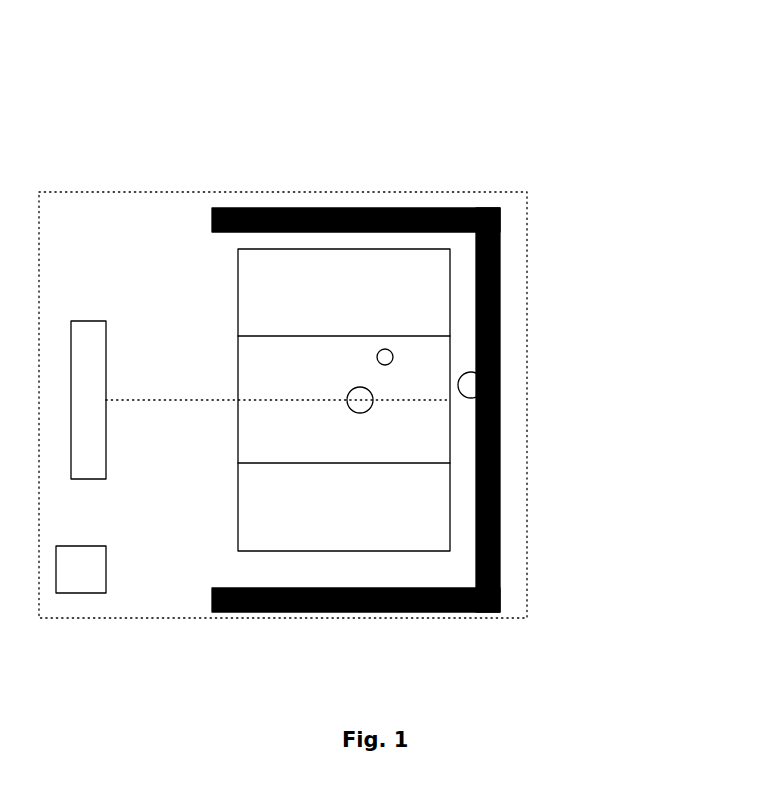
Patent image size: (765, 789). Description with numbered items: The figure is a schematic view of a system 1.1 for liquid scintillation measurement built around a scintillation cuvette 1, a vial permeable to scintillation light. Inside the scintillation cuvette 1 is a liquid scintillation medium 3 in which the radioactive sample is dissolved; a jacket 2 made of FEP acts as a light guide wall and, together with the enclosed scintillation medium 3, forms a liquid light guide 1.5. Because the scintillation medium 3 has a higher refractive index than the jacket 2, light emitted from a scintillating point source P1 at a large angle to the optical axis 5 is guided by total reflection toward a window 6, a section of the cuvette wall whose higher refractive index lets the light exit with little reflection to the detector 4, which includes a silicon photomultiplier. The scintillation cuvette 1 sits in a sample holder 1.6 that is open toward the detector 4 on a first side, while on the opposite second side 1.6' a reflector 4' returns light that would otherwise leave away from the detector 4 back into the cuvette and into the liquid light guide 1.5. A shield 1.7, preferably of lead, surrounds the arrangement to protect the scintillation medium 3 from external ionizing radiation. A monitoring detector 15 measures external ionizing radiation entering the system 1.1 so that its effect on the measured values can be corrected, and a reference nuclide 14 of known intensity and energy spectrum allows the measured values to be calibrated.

The system 1.1 is at (607, 83).
The scintillation cuvette 1 is at (450, 492).
The jacket 2 is at (318, 336).
The liquid scintillation medium 3 is at (433, 372).
The detector 4 is at (88, 352).
The reflector 4' is at (543, 385).
The optical axis 5 is at (425, 400).
The window 6 is at (238, 437).
The reference nuclide 14 is at (390, 351).
The monitoring detector 15 is at (98, 561).
The liquid light guide 1.5 is at (357, 463).
The sample holder 1.6 is at (356, 359).
The second side of the sample holder 1.6' is at (478, 379).
The shield 1.7 is at (527, 247).
The scintillating point source P1 is at (363, 406).